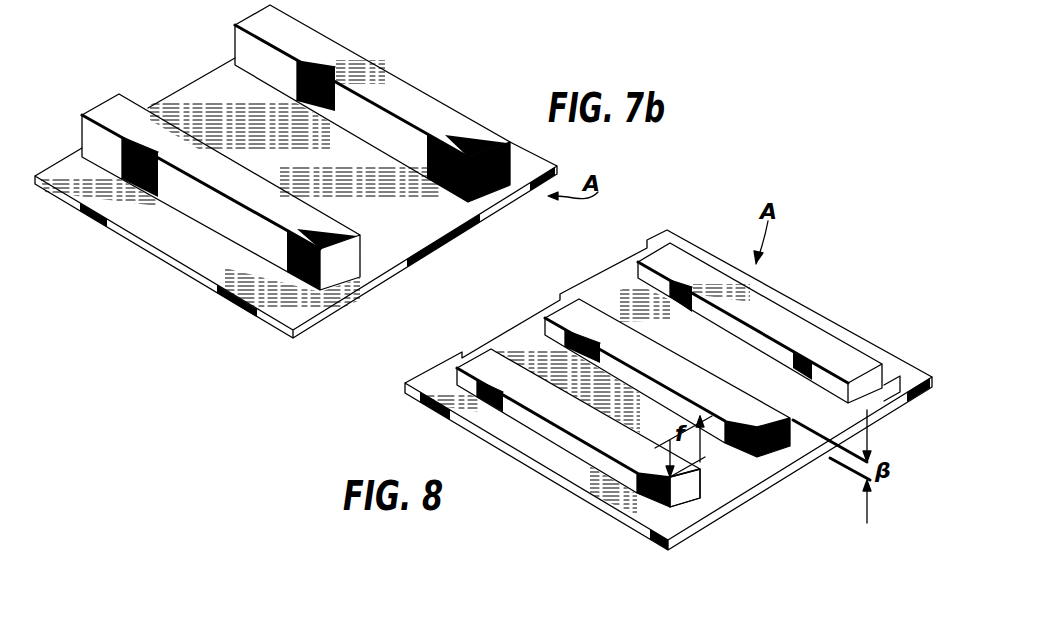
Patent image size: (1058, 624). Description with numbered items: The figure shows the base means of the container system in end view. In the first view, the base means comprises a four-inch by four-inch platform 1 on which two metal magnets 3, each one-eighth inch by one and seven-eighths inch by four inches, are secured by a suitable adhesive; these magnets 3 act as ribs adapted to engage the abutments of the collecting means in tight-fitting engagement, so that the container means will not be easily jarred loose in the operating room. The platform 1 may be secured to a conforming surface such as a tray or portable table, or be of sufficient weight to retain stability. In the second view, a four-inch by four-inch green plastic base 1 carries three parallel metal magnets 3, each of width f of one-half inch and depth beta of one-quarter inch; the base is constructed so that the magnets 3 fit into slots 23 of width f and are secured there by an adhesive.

In FIG. 7B, the platform 1 is at (443, 218).
In FIG. 8, the platform 1 is at (893, 401).
In FIG. 7B, the metal magnets 3 is at (404, 97).
In FIG. 8, the metal magnets 3 is at (850, 362).
In FIG. 8, the slots 23 is at (706, 506).